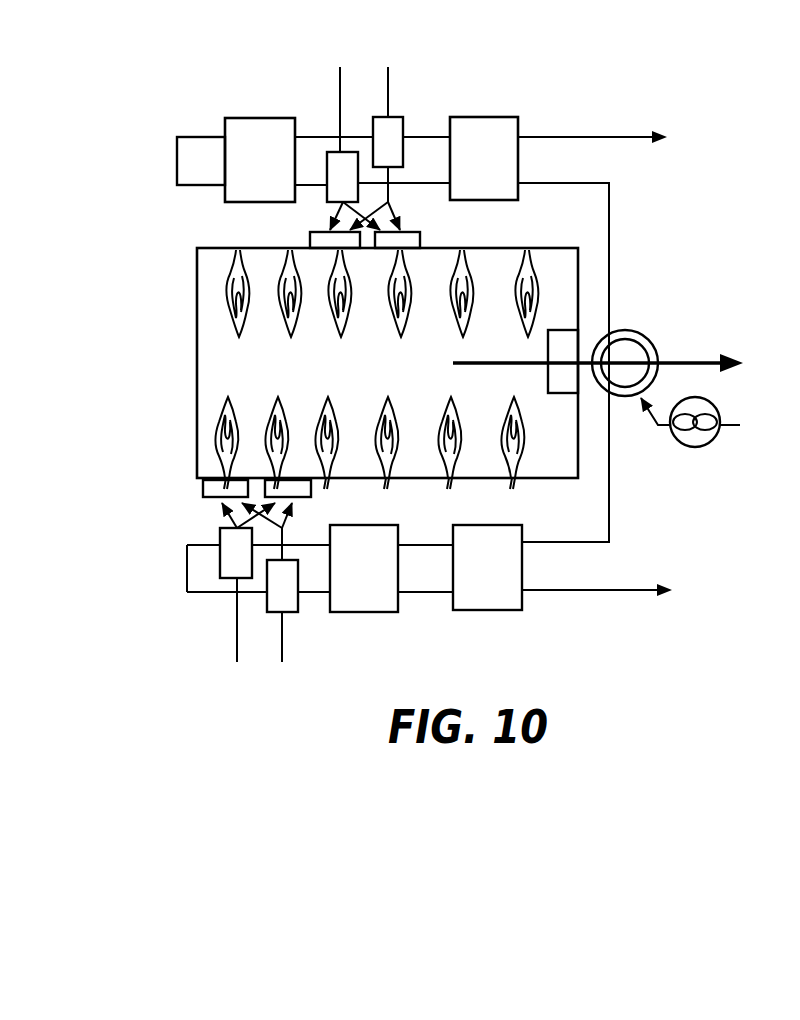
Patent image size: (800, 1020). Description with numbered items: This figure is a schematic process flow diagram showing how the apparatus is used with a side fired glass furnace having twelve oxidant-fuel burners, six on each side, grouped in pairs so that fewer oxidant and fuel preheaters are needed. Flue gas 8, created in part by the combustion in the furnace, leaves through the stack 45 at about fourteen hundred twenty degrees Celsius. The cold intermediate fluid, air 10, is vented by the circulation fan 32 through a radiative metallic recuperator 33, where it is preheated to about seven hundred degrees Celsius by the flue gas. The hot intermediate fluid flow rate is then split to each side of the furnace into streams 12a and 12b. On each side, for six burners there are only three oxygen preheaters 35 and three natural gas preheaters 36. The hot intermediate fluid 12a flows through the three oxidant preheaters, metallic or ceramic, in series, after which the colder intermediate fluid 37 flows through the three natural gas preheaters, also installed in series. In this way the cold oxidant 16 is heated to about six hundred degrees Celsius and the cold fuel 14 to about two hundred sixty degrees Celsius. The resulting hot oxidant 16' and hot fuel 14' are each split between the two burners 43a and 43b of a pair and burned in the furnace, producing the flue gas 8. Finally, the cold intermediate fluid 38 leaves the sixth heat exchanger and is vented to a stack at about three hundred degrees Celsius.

The flue gas 8 is at (470, 363).
The air 10 is at (740, 425).
The hot intermediate fluid stream 12a is at (609, 247).
The hot intermediate fluid stream 12b is at (609, 498).
The cold fuel 14 is at (408, 73).
The hot fuel 14' is at (422, 229).
The cold oxidant 16 is at (321, 89).
The hot oxidant 16' is at (309, 230).
The circulation fan 32 is at (683, 445).
The radiative metallic recuperator 33 is at (638, 330).
The oxygen preheater 35 is at (327, 193).
The natural gas preheater 36 is at (403, 117).
The colder intermediate fluid 37 is at (177, 148).
The cold intermediate fluid 38 is at (583, 137).
The burner 43a is at (322, 250).
The burner 43b is at (385, 250).
The stack 45 is at (565, 328).